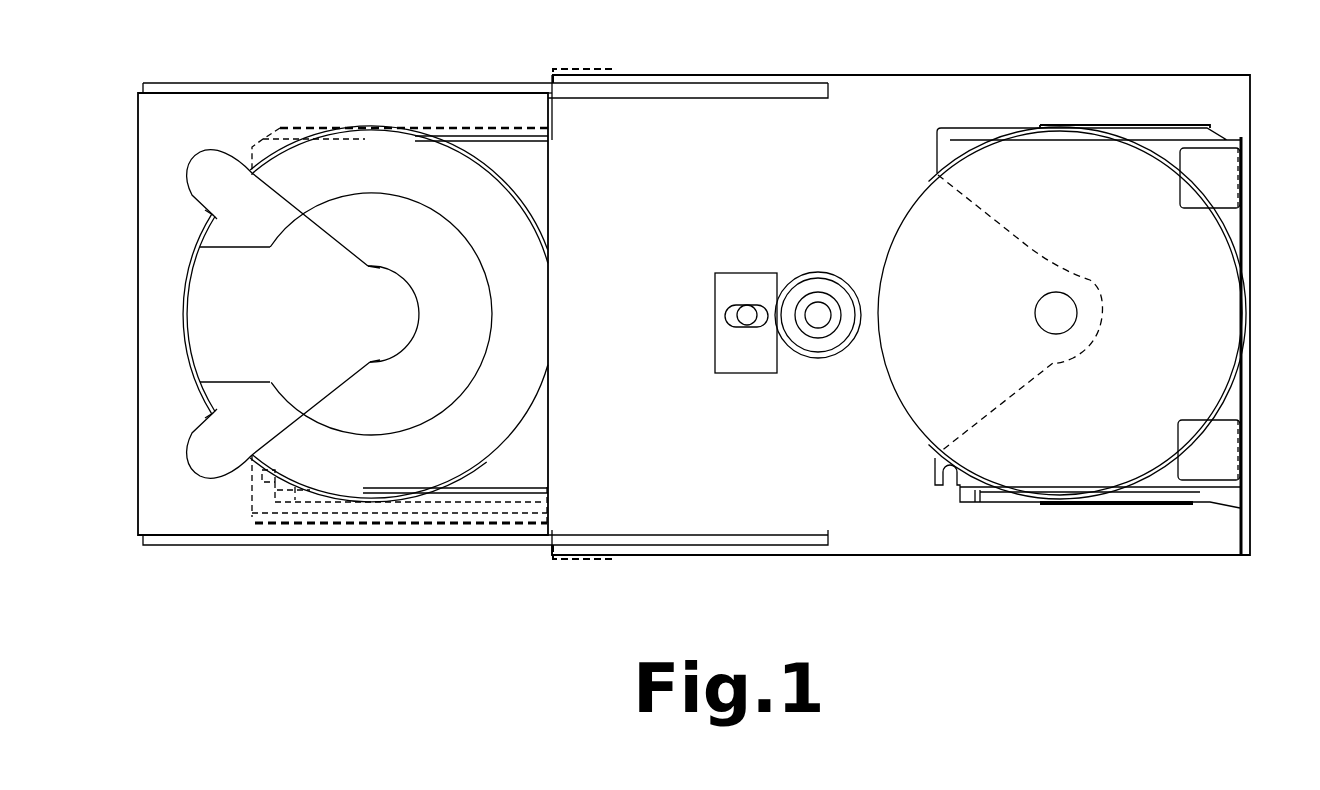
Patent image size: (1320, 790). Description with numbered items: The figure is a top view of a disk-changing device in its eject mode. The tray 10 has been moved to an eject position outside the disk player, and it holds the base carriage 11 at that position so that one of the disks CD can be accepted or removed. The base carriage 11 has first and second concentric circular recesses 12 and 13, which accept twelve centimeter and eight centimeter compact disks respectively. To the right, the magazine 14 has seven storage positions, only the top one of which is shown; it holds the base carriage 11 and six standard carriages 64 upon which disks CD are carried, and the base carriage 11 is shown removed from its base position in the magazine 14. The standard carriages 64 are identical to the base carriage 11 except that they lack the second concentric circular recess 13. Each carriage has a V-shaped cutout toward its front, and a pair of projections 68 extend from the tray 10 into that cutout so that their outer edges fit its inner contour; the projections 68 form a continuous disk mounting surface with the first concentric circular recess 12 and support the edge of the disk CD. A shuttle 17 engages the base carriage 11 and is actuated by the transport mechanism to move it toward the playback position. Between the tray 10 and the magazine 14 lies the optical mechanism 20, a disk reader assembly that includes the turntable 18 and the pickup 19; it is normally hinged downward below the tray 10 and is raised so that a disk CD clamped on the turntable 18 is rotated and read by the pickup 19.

The tray 10 is at (188, 110).
The base carriage 11 is at (538, 228).
The first concentric circular recess 12 is at (352, 186).
The second concentric circular recess 13 is at (362, 249).
The magazine 14 is at (1110, 125).
The shuttle 17 is at (263, 485).
The turntable 18 is at (802, 352).
The pickup 19 is at (738, 362).
The optical mechanism 20 is at (770, 303).
The standard carriage 64 is at (1232, 242).
The projections 68 is at (246, 397).
The disk CD is at (927, 210).